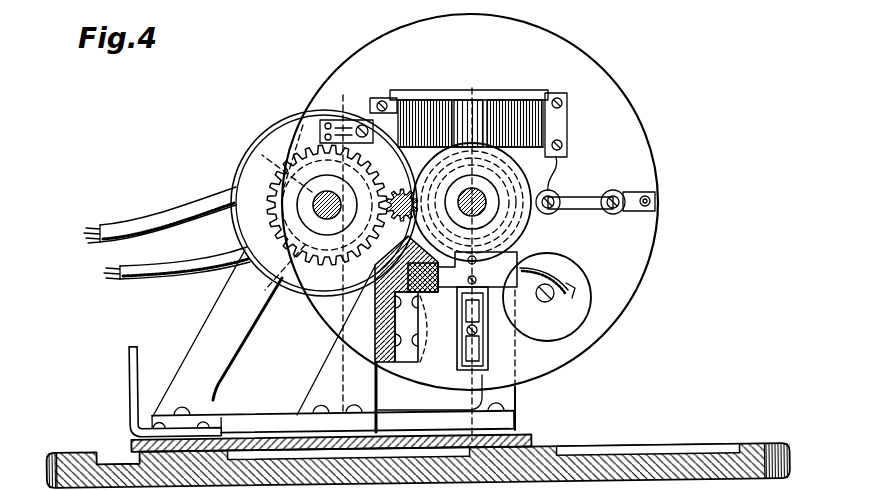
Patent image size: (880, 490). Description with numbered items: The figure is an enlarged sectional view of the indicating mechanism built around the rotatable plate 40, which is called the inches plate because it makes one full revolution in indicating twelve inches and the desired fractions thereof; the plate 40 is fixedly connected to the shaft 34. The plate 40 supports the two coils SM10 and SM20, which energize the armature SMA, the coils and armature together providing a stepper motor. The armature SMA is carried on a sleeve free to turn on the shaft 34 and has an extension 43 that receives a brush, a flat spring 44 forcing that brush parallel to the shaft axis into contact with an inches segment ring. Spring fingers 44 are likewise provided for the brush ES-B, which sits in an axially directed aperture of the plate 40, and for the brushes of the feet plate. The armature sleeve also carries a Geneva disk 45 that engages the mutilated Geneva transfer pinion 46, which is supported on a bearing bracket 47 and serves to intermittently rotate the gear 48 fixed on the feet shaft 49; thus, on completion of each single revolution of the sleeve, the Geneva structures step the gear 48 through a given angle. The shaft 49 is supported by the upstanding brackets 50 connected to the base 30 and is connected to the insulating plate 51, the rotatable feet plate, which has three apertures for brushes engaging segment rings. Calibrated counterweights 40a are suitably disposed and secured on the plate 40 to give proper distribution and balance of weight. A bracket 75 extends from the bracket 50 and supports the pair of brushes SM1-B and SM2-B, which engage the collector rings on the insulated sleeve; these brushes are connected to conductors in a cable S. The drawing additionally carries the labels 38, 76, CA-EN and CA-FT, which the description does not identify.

The base 30 is at (637, 460).
The mounting plate 38 is at (505, 398).
The angle bracket 76 is at (139, 384).
The upstanding brackets 50 is at (213, 336).
The bearing bracket 47 is at (342, 335).
The rotatable plate 40 is at (600, 89).
The insulating plate 51 is at (247, 171).
The gear 48 is at (283, 173).
The feet shaft 49 is at (327, 206).
The mutilated Geneva transfer pinion 46 is at (400, 190).
The shaft 34 is at (477, 190).
The armature SMA is at (467, 97).
The coil SM20 is at (416, 79).
The coil SM10 is at (520, 110).
The Geneva disk 45 is at (553, 192).
The flat spring 44 is at (340, 122).
The brush ES-B is at (656, 194).
The brush SM1-B is at (560, 228).
The brush SM2-B is at (560, 243).
The extension 43 is at (467, 315).
The calibrated counterweights 40a is at (589, 300).
The bracket 75 is at (512, 308).
The cable S is at (573, 305).
The cable EN CA-EN is at (118, 227).
The cable FT CA-FT is at (133, 284).